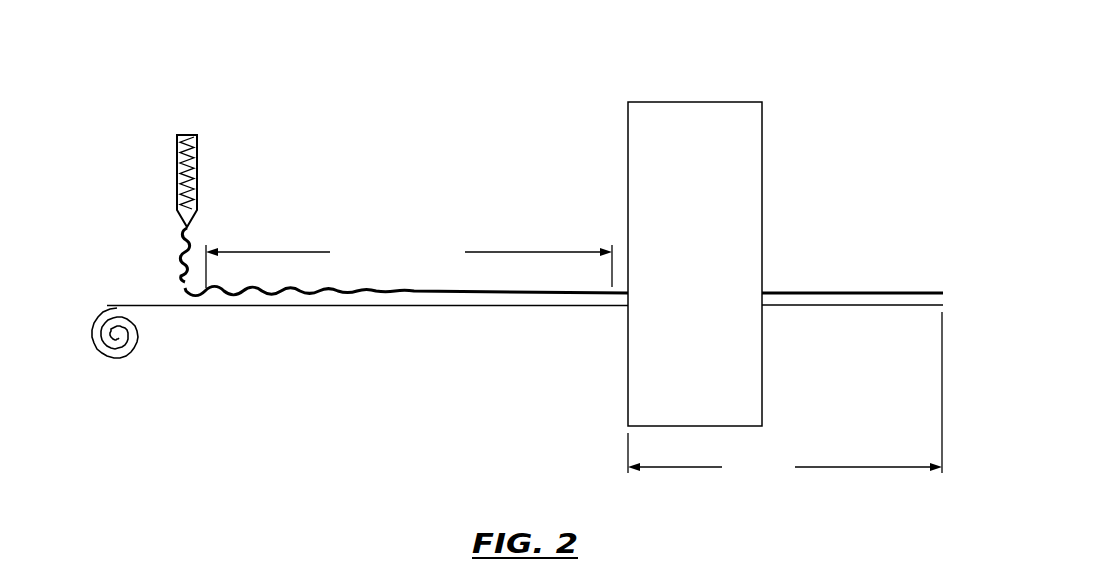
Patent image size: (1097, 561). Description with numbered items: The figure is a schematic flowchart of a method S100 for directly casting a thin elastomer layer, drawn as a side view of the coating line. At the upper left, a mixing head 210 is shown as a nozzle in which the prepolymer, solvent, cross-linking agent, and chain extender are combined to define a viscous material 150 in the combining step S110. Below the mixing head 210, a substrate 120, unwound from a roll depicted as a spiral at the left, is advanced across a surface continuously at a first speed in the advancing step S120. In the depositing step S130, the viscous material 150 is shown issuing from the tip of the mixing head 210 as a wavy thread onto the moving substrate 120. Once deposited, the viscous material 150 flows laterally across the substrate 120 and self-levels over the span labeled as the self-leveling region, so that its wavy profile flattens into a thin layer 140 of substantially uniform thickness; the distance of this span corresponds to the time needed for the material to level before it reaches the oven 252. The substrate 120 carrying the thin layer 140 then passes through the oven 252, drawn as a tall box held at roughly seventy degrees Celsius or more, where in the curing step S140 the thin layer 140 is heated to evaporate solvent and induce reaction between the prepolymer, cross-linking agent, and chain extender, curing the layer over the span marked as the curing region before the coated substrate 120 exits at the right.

The method for directly casting a thin elastomer layer S100 is at (138, 99).
The mixing head 210 is at (177, 153).
The combining step S110 is at (214, 161).
The depositing step S130 is at (165, 248).
The viscous material 150 is at (183, 278).
The substrate 120 is at (192, 308).
The thin layer 140 is at (505, 294).
The advancing step S120 is at (355, 332).
The oven 252 is at (663, 135).
The curing step S140 is at (718, 152).